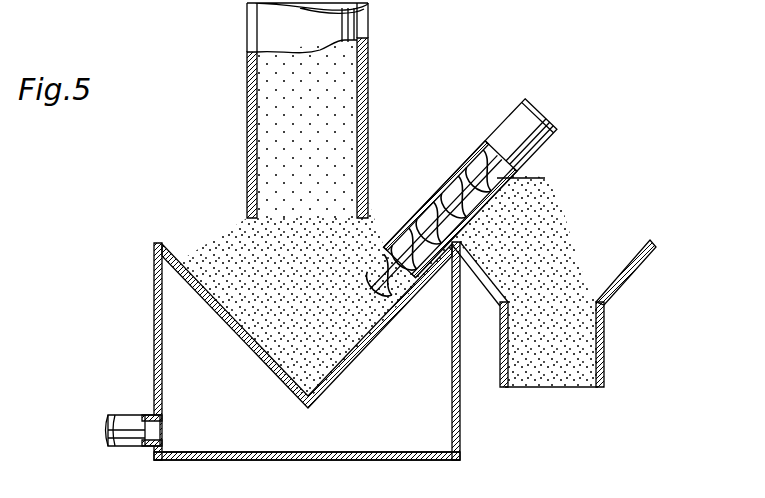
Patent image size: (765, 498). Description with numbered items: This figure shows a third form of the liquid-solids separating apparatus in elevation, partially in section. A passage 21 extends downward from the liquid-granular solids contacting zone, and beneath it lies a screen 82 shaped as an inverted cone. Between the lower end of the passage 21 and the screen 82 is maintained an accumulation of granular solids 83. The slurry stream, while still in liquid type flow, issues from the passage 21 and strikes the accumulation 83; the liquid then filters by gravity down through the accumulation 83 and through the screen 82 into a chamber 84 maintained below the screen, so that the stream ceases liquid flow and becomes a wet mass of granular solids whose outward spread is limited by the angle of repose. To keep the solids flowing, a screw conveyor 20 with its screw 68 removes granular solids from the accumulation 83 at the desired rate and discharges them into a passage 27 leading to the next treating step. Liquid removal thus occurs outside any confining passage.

The screw conveyor 20 is at (480, 156).
The passage 21 is at (247, 72).
The passage 27 is at (605, 361).
The screw 68 is at (512, 178).
The screen 82 is at (258, 352).
The accumulation of granular solids 83 is at (243, 244).
The chamber 84 is at (361, 442).